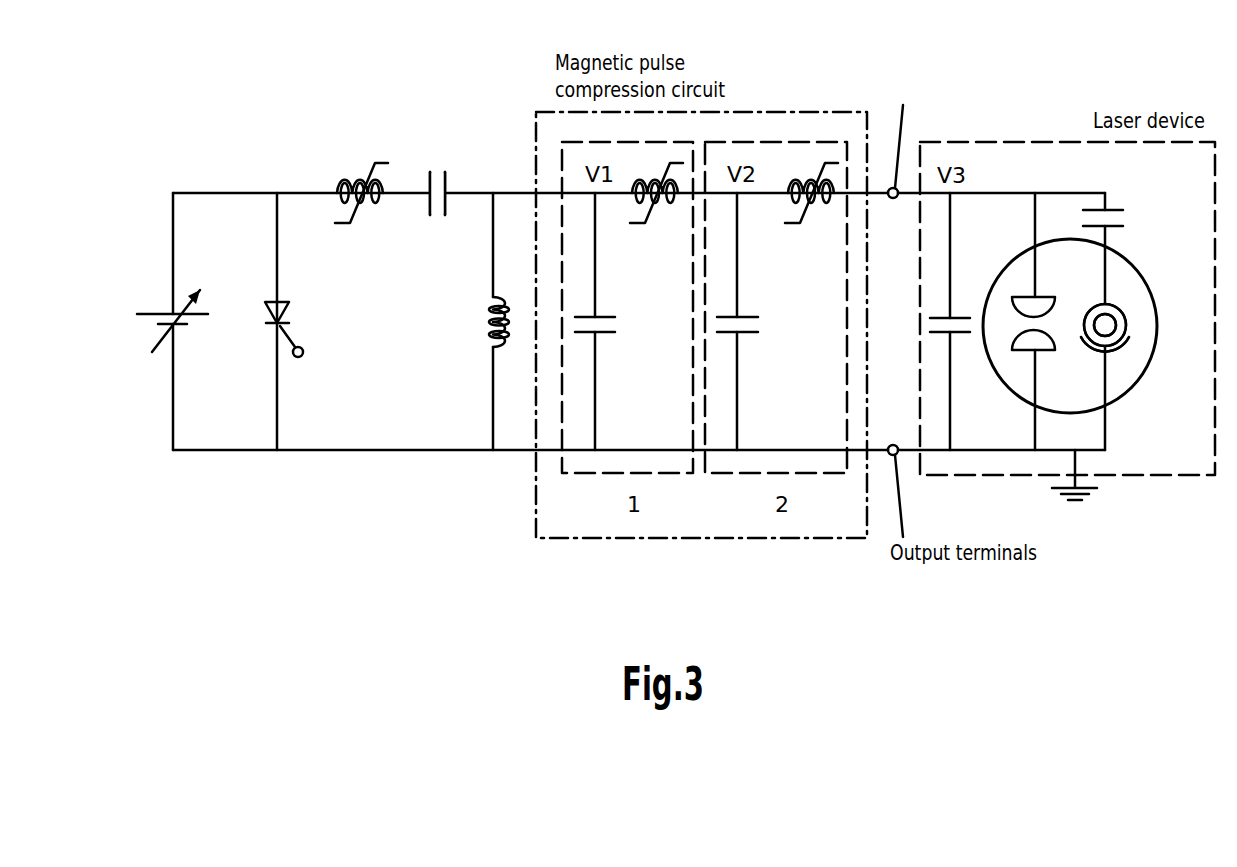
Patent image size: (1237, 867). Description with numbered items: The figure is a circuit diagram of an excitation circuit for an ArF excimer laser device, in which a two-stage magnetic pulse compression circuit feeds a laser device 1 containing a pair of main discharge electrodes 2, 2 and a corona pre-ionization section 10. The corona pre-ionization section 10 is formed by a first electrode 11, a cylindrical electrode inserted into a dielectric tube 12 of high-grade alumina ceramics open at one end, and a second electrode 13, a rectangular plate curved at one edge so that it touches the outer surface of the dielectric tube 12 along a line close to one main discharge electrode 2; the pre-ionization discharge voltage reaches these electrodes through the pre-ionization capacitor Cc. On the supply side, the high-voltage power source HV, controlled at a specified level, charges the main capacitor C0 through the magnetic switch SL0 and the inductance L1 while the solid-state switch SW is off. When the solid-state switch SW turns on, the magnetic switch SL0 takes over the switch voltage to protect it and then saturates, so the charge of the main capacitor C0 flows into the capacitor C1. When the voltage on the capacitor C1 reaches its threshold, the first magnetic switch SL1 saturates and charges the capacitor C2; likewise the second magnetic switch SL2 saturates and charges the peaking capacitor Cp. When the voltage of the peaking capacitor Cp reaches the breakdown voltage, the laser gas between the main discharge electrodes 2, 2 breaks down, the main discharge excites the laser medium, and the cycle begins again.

The laser chamber 1 is at (1133, 263).
The main discharge electrode 2 is at (1060, 301).
The corona pre-ionization section 10 is at (1139, 319).
The 1st electrode 11 is at (1112, 311).
The dielectric tube 12 is at (1094, 302).
The 2nd electrode 13 is at (1125, 347).
The high-voltage power source HV is at (179, 325).
The solid-state switch SW is at (299, 329).
The magnetic switch SL0 is at (361, 209).
The main capacitor C0 is at (439, 213).
The inductance L1 is at (478, 322).
The 1st magnetic switch SL1 is at (656, 209).
The 2nd magnetic switch SL2 is at (811, 209).
The capacitor C1 is at (608, 343).
The capacitor C2 is at (749, 343).
The peaking capacitor Cp is at (957, 344).
The pre-ionization capacitor Cc is at (1119, 217).